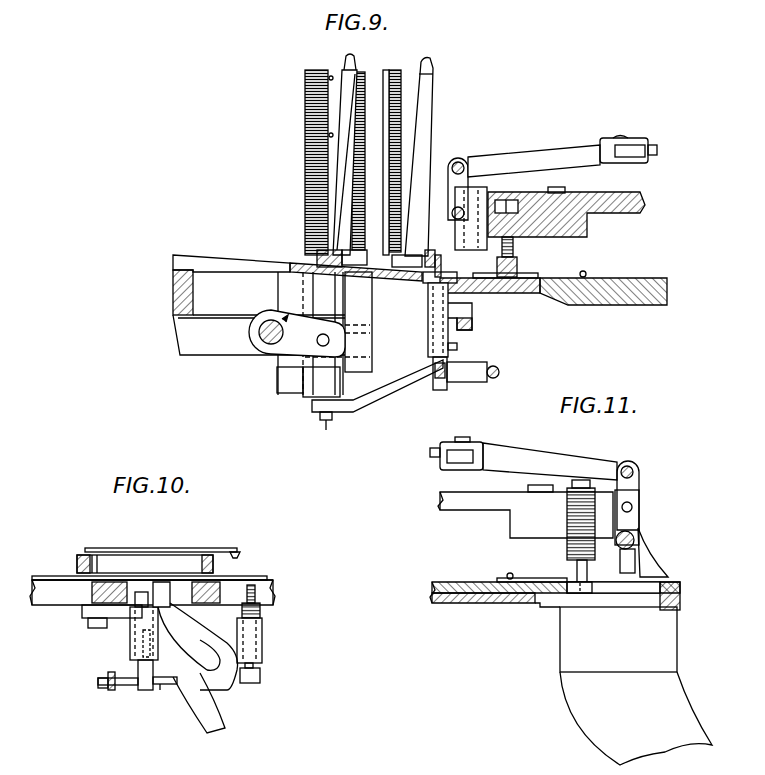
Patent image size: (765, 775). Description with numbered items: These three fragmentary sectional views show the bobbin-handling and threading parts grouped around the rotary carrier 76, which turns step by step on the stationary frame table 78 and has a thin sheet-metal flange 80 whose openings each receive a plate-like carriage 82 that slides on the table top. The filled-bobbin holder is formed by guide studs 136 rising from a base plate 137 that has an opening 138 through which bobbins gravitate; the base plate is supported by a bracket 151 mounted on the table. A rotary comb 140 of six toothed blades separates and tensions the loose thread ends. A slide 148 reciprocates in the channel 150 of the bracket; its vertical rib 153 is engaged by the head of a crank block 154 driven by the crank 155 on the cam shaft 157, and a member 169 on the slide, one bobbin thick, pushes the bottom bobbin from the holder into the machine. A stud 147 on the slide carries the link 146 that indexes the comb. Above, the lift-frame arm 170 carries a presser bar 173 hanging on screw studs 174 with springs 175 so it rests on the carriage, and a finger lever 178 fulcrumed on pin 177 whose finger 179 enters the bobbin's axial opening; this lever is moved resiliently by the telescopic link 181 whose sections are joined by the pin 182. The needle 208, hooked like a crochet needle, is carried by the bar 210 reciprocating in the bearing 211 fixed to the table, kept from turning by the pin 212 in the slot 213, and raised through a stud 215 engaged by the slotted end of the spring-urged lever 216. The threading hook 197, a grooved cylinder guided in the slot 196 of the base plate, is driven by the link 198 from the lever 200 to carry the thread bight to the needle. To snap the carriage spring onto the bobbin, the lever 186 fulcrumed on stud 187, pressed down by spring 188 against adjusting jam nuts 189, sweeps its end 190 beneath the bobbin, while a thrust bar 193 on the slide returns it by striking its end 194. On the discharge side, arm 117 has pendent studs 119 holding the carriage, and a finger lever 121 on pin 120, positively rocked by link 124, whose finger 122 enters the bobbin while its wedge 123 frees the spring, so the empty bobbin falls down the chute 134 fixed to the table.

In FIG. 9, the rotary carrier 76 is at (640, 286).
In FIG. 11, the rotary carrier 76 is at (468, 585).
In FIG. 11, the stationary frame table 78 is at (492, 600).
In FIG. 10, the stationary frame table 78 is at (274, 593).
In FIG. 9, the plane horizontal flange 80 is at (518, 274).
In FIG. 11, the plane horizontal flange 80 is at (517, 578).
In FIG. 10, the plane horizontal flange 80 is at (268, 578).
In FIG. 11, the carriage 82 is at (606, 593).
In FIG. 11, the arm 117 is at (480, 500).
In FIG. 11, the pendent stud 119 is at (570, 568).
In FIG. 11, the pin 120 is at (640, 507).
In FIG. 11, the oscillatory finger lever 121 is at (640, 476).
In FIG. 11, the finger 122 is at (650, 570).
In FIG. 11, the wedge 123 is at (640, 555).
In FIG. 11, the link 124 is at (565, 462).
In FIG. 11, the chute 134 is at (636, 686).
In FIG. 9, the guide stud 136 is at (431, 101).
In FIG. 9, the base plate 137 is at (318, 252).
In FIG. 10, the base plate 137 is at (214, 570).
In FIG. 9, the opening 138 is at (318, 235).
In FIG. 9, the rotary comb 140 is at (305, 133).
In FIG. 9, the link 146 is at (378, 395).
In FIG. 9, the stud 147 is at (324, 432).
In FIG. 9, the slide 148 is at (283, 296).
In FIG. 9, the channel 150 is at (259, 335).
In FIG. 9, the bracket 151 is at (231, 285).
In FIG. 9, the vertical rib 153 is at (320, 305).
In FIG. 9, the crank block 154 is at (345, 338).
In FIG. 9, the crank 155 is at (292, 360).
In FIG. 9, the cam shaft 157 is at (268, 345).
In FIG. 9, the member 169 is at (356, 284).
In FIG. 9, the arm 170 is at (618, 198).
In FIG. 9, the presser bar 173 is at (513, 268).
In FIG. 9, the screw stud 174 is at (530, 192).
In FIG. 9, the spring 175 is at (514, 247).
In FIG. 9, the pin 177 is at (450, 215).
In FIG. 9, the oscillatory finger lever 178 is at (458, 242).
In FIG. 9, the finger 179 is at (450, 263).
In FIG. 9, the link 181 is at (520, 158).
In FIG. 9, the pin 182 is at (580, 147).
In FIG. 10, the lever 186 is at (204, 646).
In FIG. 10, the stud 187 is at (262, 643).
In FIG. 10, the spring 188 is at (262, 612).
In FIG. 10, the jam nut 189 is at (261, 672).
In FIG. 10, the lever end 190 is at (180, 626).
In FIG. 10, the thrust bar 193 is at (110, 690).
In FIG. 10, the lever end 194 is at (108, 682).
In FIG. 10, the slot 196 is at (145, 565).
In FIG. 10, the threading hook 197 is at (77, 565).
In FIG. 10, the link 198 is at (150, 548).
In FIG. 10, the lever 200 is at (240, 555).
In FIG. 9, the needle 208 is at (401, 322).
In FIG. 10, the needle 208 is at (95, 605).
In FIG. 9, the bar 210 is at (447, 388).
In FIG. 10, the bar 210 is at (138, 670).
In FIG. 10, the bearing 211 is at (130, 650).
In FIG. 9, the pin 212 is at (458, 346).
In FIG. 10, the pin 212 is at (152, 650).
In FIG. 10, the slot 213 is at (175, 670).
In FIG. 9, the stud 215 is at (437, 378).
In FIG. 10, the stud 215 is at (163, 690).
In FIG. 10, the lever 216 is at (218, 720).